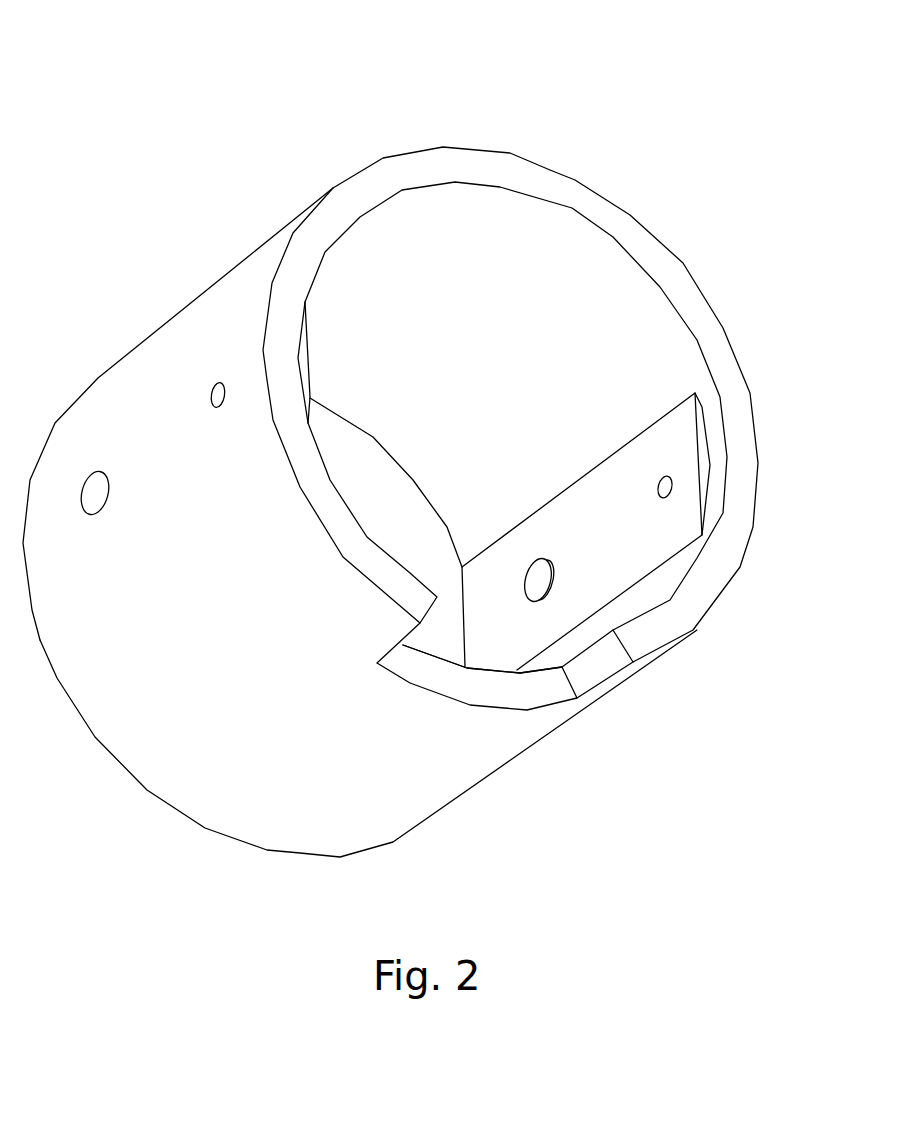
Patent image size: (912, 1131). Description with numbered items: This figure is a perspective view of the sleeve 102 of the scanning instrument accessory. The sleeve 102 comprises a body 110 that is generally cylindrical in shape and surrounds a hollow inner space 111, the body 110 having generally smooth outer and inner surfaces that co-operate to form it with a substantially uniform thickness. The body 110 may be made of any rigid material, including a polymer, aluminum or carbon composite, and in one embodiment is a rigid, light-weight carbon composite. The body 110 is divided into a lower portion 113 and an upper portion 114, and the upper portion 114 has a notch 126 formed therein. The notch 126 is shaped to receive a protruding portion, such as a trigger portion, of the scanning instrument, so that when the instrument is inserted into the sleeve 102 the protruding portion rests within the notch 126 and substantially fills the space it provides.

The sleeve 102 is at (407, 474).
The body 110 is at (360, 562).
The hollow inner space 111 is at (377, 473).
The lower portion 113 is at (175, 762).
The upper portion 114 is at (527, 502).
The notch 126 is at (496, 698).